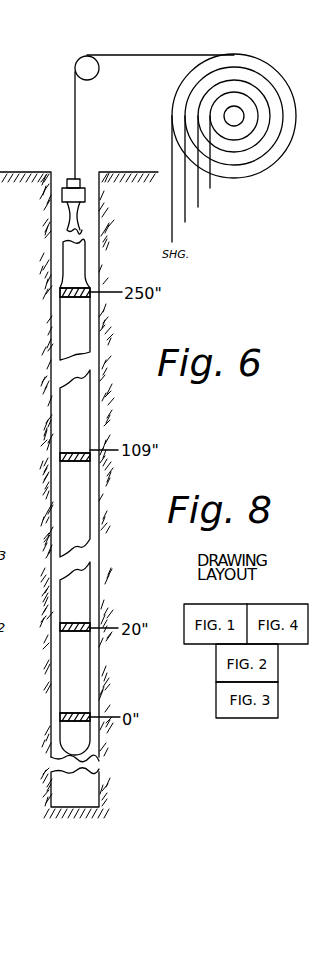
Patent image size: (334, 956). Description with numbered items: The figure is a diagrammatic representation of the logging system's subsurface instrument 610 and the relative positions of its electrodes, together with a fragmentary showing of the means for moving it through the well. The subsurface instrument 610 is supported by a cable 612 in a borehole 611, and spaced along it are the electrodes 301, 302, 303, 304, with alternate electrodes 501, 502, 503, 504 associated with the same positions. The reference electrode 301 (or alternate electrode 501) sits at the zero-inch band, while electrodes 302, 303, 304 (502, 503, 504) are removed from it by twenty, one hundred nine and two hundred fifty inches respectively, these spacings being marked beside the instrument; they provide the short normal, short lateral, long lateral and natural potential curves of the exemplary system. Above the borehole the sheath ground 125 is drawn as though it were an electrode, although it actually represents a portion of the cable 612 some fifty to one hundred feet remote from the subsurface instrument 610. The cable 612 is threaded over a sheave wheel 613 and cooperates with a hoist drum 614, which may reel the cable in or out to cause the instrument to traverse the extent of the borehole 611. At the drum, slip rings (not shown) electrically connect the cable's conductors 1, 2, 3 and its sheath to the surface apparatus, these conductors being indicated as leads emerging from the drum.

The subsurface instrument 610 is at (86, 400).
The borehole 611 is at (93, 750).
The cable 612 is at (75, 147).
The sheave wheel 613 is at (88, 58).
The hoist drum 614 is at (279, 72).
The electrode 301 is at (62, 720).
The electrode 302 is at (66, 623).
The electrode 303 is at (64, 453).
The electrode 304 is at (65, 288).
The alternate electrode 501 is at (45, 738).
The alternate electrode 502 is at (50, 626).
The alternate electrode 503 is at (48, 450).
The alternate electrode 504 is at (48, 295).
The sheath ground 125 is at (85, 195).
The conductor 1 is at (214, 158).
The conductor 2 is at (200, 167).
The conductor 3 is at (186, 176).